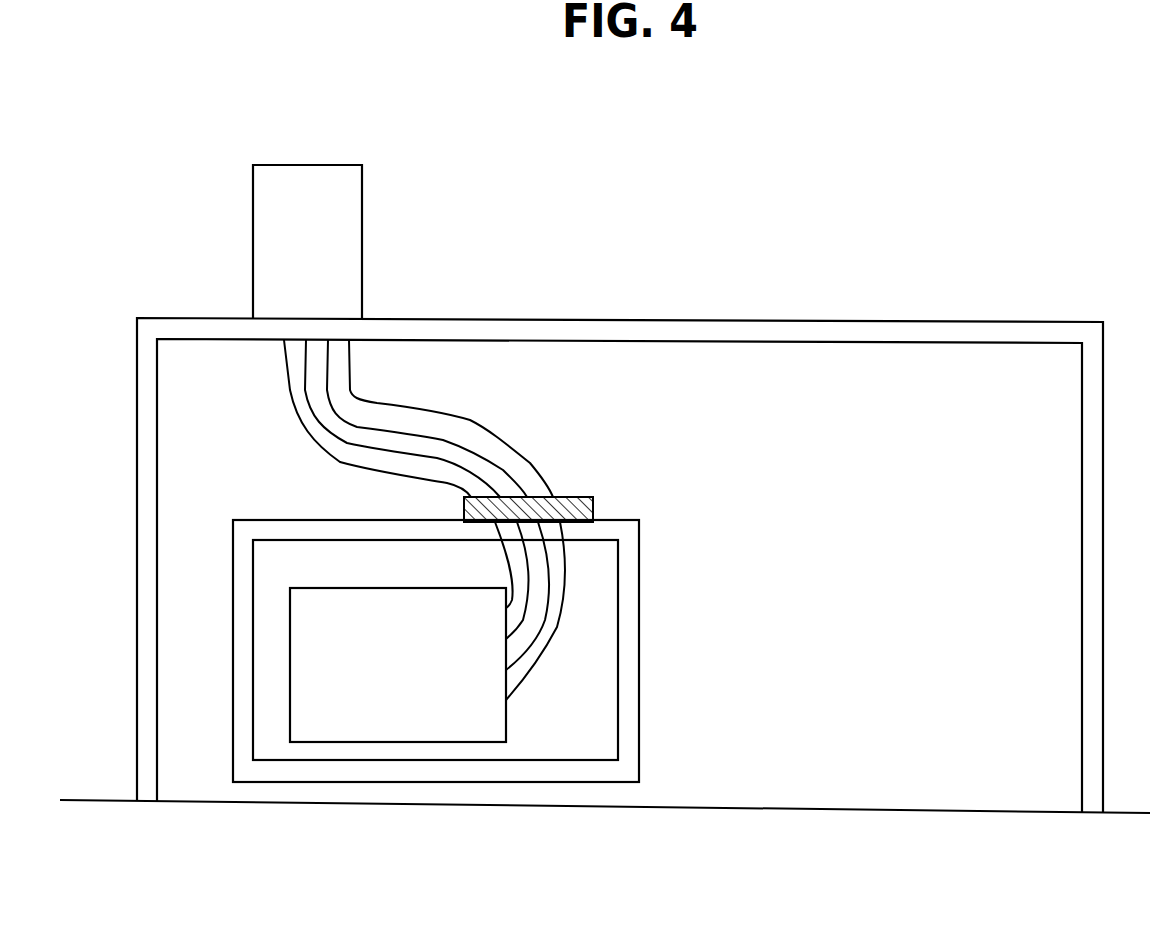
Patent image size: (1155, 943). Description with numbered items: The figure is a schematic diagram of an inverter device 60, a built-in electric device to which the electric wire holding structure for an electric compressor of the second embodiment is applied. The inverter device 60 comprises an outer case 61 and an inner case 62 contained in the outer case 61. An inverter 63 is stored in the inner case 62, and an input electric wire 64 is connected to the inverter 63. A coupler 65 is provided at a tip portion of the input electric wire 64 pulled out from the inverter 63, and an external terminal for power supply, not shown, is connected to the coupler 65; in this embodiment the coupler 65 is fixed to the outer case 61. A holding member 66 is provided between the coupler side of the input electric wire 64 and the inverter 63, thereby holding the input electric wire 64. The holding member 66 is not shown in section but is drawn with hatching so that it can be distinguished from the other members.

The inverter device 60 is at (965, 318).
The outer case 61 is at (758, 328).
The inner case 62 is at (637, 781).
The inverter 63 is at (408, 680).
The input electric wire 64 is at (485, 432).
The coupler 65 is at (330, 211).
The holding member 66 is at (555, 495).